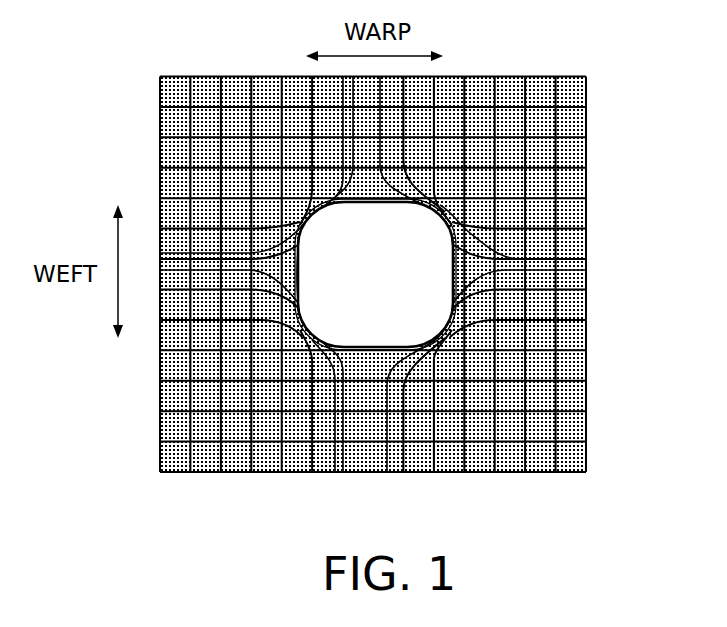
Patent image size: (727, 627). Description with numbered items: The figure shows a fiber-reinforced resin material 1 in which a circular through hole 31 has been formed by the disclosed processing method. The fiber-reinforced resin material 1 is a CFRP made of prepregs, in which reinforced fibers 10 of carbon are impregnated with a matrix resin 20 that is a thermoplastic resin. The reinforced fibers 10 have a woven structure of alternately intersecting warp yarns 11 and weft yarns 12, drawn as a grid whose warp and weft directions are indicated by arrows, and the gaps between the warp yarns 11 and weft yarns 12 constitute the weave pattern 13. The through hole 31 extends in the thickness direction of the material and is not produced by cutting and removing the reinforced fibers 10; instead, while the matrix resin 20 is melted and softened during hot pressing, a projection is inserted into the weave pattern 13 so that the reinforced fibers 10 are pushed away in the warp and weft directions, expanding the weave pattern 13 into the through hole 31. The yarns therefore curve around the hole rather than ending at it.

The fiber-reinforced resin material 1 is at (423, 283).
The reinforced fibers 10 is at (423, 283).
The warp yarns 11 is at (600, 470).
The weft yarns 12 is at (586, 436).
The weave pattern 13 is at (576, 158).
The matrix resin 20 is at (570, 364).
The through hole 31 is at (441, 282).